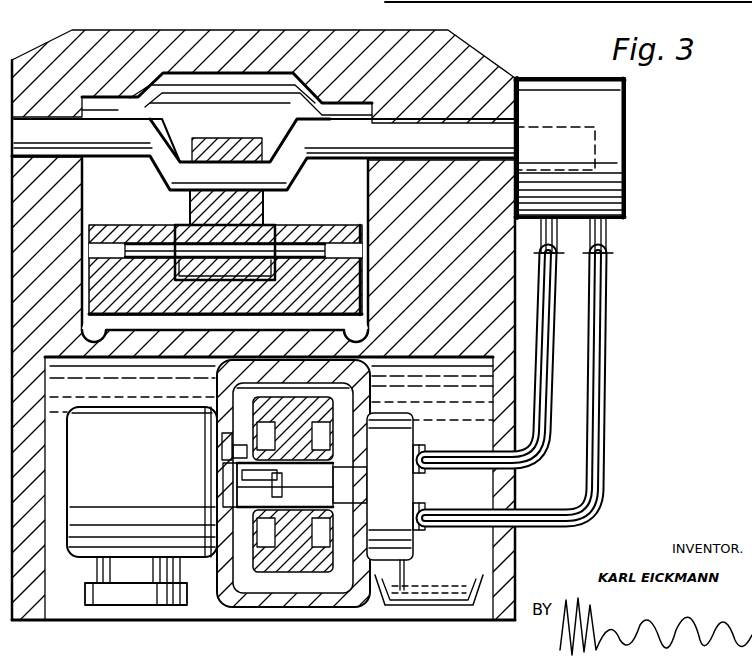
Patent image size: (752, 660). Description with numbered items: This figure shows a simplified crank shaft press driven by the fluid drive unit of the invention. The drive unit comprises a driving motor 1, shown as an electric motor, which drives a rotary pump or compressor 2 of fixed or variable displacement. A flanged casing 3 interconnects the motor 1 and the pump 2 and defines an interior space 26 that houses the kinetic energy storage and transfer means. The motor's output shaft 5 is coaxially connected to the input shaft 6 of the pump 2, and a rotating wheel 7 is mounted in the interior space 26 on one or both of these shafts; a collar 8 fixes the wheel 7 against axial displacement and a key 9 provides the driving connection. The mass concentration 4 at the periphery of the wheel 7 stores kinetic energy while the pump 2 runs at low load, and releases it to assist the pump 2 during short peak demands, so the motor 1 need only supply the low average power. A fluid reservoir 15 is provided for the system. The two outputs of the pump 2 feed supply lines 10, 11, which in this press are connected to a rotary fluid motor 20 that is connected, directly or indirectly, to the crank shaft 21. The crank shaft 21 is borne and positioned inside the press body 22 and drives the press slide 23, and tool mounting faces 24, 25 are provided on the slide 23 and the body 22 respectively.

The driving motor 1 is at (127, 420).
The rotary pump or compressor 2 is at (402, 425).
The flanged casing 3 is at (225, 370).
The mass concentration 4 is at (225, 393).
The output or drive shaft of motor 5 is at (240, 480).
The input or drive shaft of pump 6 is at (345, 467).
The rotating wheel 7 is at (300, 528).
The collar 8 is at (240, 453).
The key 9 is at (300, 508).
The supply line 10 is at (605, 290).
The supply line 11 is at (556, 298).
The fluid reservoir 15 is at (443, 583).
The rotary fluid motor 20 is at (605, 113).
The crank shaft 21 is at (309, 196).
The press body 22 is at (67, 190).
The press slide 23 is at (115, 282).
The tool mounting face 24 is at (153, 316).
The tool mounting face 25 is at (198, 316).
The interior space 26 is at (247, 582).